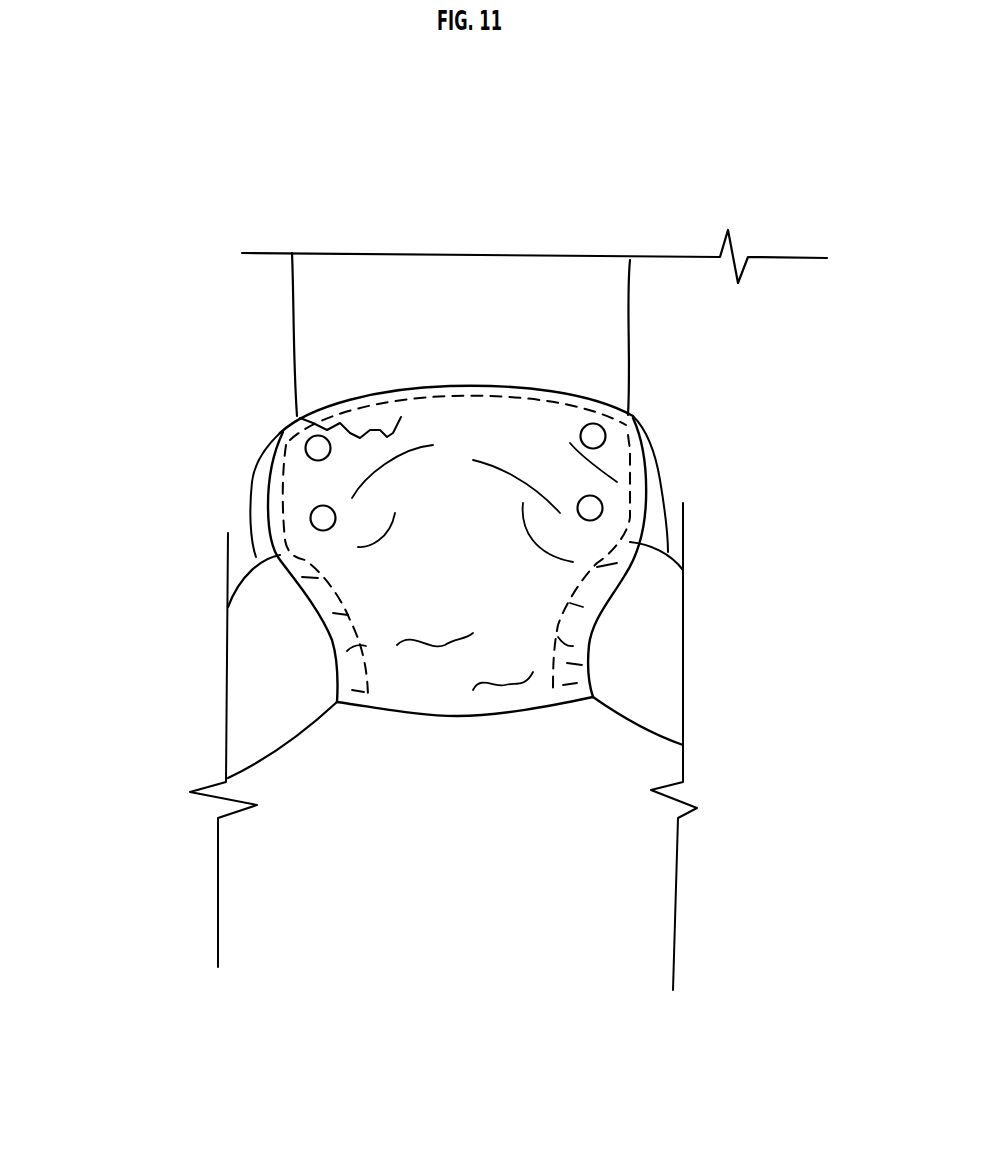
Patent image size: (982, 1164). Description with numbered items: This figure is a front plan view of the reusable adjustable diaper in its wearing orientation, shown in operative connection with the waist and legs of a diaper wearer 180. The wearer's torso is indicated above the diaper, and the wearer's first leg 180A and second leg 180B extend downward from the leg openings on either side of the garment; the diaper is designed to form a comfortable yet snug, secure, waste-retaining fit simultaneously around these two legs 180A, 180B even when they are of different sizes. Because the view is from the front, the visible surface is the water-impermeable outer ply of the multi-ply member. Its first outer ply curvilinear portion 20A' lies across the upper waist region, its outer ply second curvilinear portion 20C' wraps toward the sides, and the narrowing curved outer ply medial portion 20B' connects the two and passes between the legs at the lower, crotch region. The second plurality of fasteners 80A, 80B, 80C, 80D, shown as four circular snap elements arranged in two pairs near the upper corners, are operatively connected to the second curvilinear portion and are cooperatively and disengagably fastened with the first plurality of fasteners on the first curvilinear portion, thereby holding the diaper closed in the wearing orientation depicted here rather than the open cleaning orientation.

The diaper wearer 180 is at (327, 298).
The first leg of the diaper wearer 180A is at (243, 670).
The second leg of the diaper wearer 180B is at (658, 656).
The first outer ply curvilinear portion 20A' is at (456, 292).
The outer ply medial portion 20B' is at (457, 673).
The outer ply second curvilinear portion 20C' is at (446, 480).
The second plurality of fasteners 80A is at (605, 437).
The second plurality of fasteners 80B is at (310, 440).
The second plurality of fasteners 80C is at (600, 504).
The second plurality of fasteners 80D is at (311, 517).